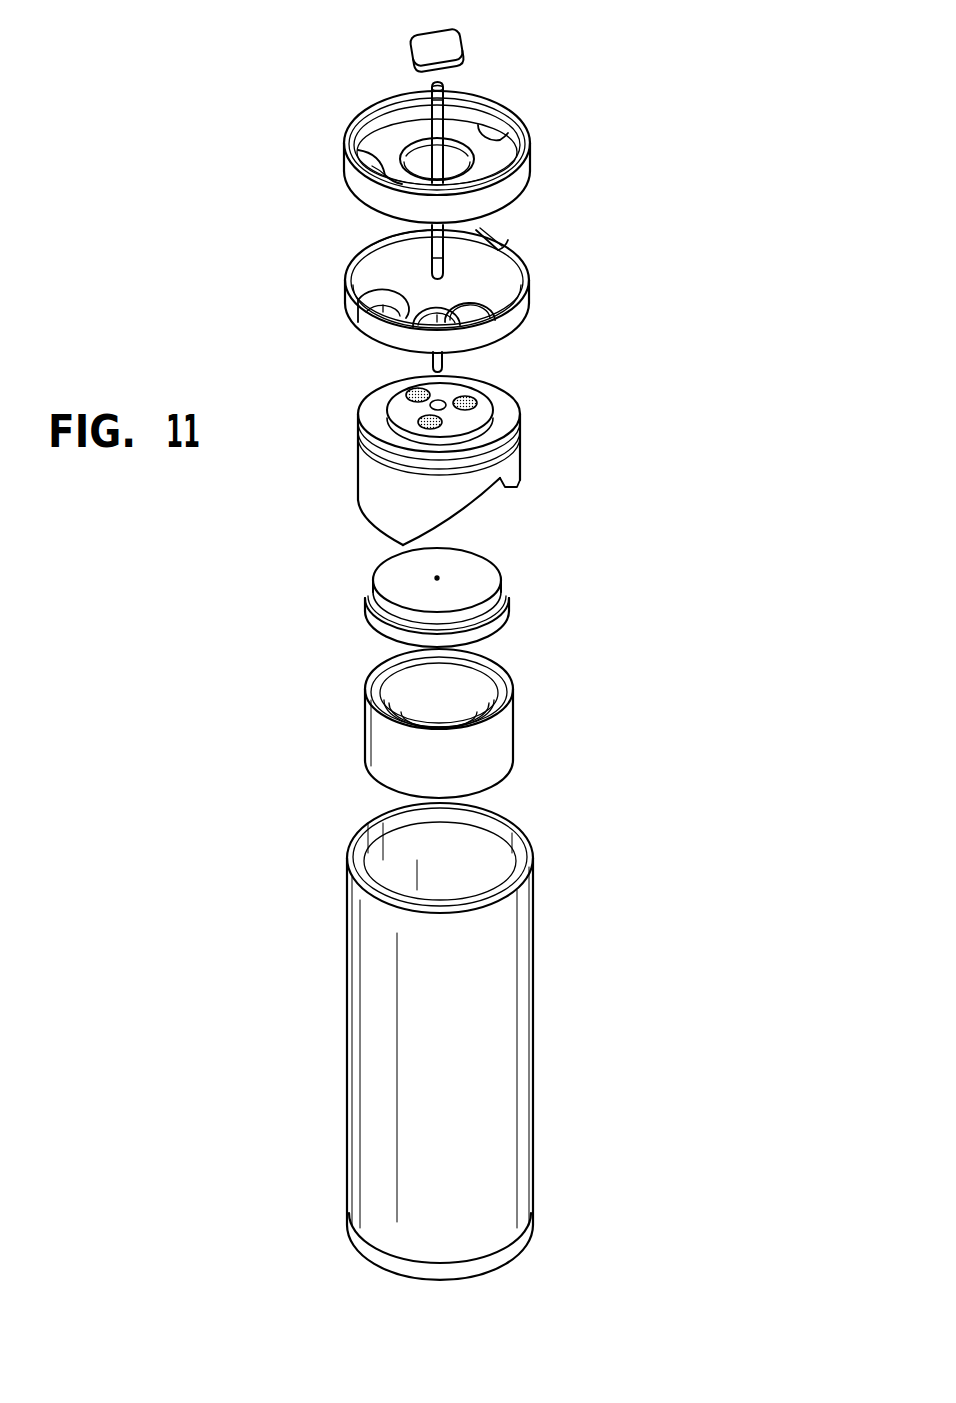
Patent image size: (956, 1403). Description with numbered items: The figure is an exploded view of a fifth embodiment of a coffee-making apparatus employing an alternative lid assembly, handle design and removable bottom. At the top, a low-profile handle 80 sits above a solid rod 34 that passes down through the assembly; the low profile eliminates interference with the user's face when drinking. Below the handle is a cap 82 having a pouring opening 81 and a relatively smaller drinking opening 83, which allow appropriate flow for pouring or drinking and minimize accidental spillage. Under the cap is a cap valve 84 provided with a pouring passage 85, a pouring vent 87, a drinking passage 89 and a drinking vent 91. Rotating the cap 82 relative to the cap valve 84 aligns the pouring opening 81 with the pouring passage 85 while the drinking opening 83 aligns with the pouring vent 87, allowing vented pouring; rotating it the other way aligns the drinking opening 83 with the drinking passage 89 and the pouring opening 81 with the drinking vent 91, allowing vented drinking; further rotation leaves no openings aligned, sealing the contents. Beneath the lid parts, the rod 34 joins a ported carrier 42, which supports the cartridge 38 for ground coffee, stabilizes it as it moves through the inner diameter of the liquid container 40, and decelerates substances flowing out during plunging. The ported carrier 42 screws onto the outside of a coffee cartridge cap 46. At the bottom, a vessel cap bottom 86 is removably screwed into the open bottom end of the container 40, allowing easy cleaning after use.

The handle 80 is at (468, 45).
The pouring opening 81 is at (382, 173).
The cap 82 is at (531, 161).
The drinking opening 83 is at (487, 128).
The solid rod 34 is at (440, 258).
The drinking passage 89 is at (368, 247).
The pouring vent 87 is at (500, 252).
The cap valve 84 is at (533, 303).
The pouring passage 85 is at (378, 298).
The drinking vent 91 is at (440, 318).
The ported carrier 42 is at (528, 406).
The coffee cartridge cap 46 is at (509, 592).
The cartridge 38 is at (514, 705).
The liquid container 40 is at (534, 976).
The vessel cap bottom 86 is at (535, 1224).